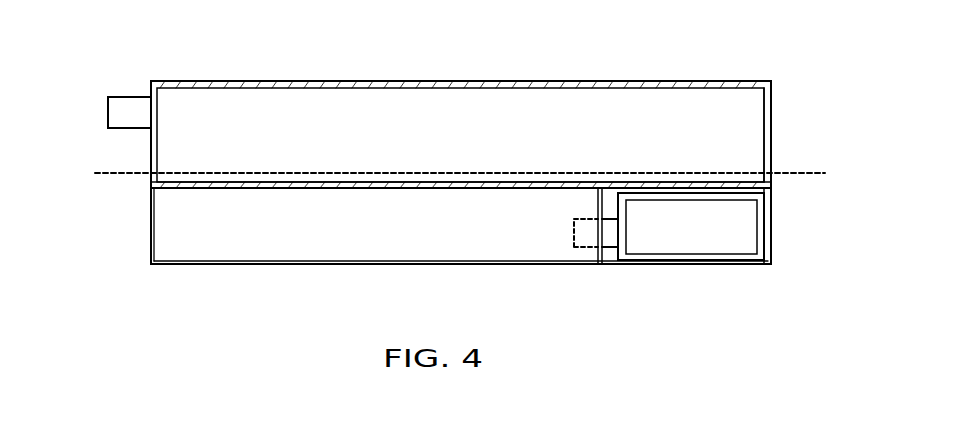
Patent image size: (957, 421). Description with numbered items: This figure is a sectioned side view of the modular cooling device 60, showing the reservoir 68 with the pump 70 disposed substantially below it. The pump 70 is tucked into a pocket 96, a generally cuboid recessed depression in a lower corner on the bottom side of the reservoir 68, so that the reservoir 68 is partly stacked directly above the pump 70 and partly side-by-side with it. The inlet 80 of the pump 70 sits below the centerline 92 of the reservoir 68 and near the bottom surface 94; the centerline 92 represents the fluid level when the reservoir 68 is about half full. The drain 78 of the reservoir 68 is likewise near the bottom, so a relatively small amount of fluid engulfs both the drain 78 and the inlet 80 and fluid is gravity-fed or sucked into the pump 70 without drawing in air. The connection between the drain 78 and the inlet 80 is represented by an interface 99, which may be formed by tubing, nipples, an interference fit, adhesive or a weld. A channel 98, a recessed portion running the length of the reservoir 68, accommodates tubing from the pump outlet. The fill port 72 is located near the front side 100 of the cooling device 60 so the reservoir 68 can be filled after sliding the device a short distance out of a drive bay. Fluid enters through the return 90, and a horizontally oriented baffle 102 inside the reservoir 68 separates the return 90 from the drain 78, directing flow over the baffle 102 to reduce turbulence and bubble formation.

The modular cooling device 60 is at (680, 25).
The reservoir 68 is at (369, 81).
The fill port 72 is at (718, 81).
The front side 100 is at (773, 113).
The centerline 92 is at (805, 173).
The baffle 102 is at (167, 189).
The bottom surface 94 is at (280, 264).
The channel 98 is at (205, 255).
The pocket 96 is at (771, 222).
The pump 70 is at (713, 262).
The interface 99 is at (610, 219).
The inlet 80 is at (614, 219).
The drain 78 is at (600, 218).
The return 90 is at (118, 97).